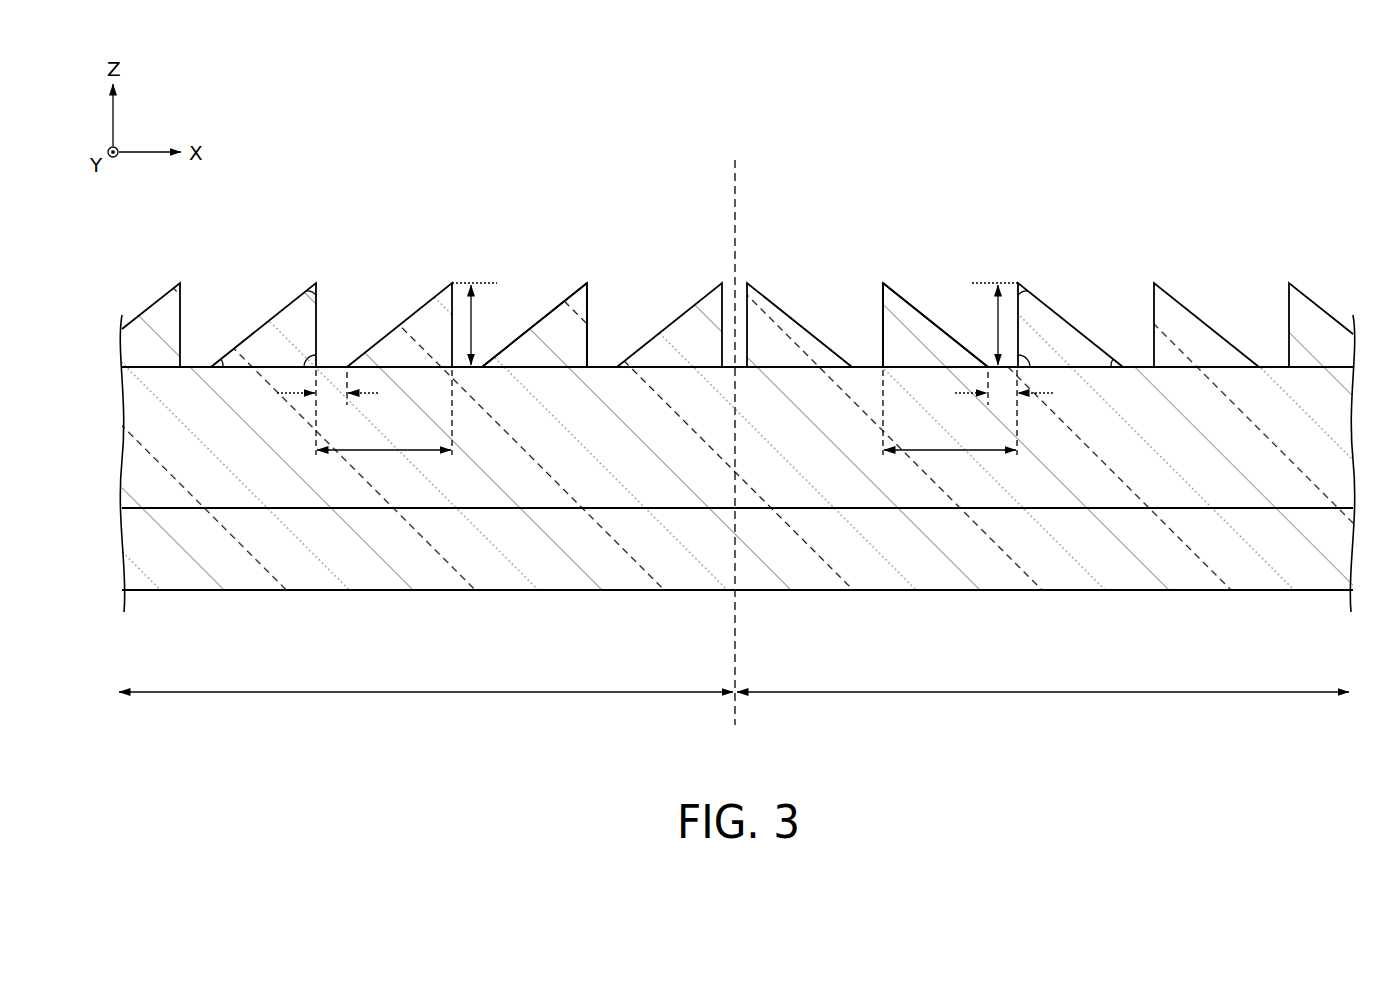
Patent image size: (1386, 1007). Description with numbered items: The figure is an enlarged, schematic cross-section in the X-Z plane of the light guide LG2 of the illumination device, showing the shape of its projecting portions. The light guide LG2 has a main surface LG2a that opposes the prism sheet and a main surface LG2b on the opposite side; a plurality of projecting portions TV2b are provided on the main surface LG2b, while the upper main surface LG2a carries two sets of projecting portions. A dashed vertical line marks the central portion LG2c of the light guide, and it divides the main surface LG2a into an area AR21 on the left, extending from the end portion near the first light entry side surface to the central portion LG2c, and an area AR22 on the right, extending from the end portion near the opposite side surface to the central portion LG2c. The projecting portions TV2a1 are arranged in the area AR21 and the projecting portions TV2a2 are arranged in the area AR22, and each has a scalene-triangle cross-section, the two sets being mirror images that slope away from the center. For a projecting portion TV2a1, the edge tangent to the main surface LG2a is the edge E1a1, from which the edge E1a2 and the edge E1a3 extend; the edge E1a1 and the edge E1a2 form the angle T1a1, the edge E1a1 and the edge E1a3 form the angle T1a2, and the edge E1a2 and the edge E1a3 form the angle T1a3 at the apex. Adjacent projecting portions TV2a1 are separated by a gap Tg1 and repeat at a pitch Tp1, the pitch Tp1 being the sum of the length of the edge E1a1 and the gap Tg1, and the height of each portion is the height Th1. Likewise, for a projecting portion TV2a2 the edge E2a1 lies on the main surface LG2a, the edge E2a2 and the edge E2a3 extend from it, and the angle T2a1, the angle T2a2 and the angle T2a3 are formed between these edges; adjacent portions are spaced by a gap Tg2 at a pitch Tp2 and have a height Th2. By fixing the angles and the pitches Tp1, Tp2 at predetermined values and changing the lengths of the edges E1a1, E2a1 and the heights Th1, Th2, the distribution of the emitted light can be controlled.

The light guide LG2 is at (737, 418).
The main surface LG2a is at (1137, 366).
The main surface LG2b is at (495, 510).
The central portion LG2c is at (735, 368).
The projecting portions TV2a1 is at (277, 327).
The projecting portions TV2a2 is at (1070, 338).
The projecting portions TV2b is at (323, 575).
The angle T1a1 is at (313, 353).
The angle T1a2 is at (236, 353).
The angle T1a3 is at (298, 292).
The angle T2a1 is at (1033, 353).
The angle T2a2 is at (1105, 355).
The angle T2a3 is at (1030, 292).
The edge E1a1 is at (567, 365).
The edge E1a2 is at (589, 336).
The edge E1a3 is at (535, 320).
The edge E2a1 is at (900, 366).
The edge E2a2 is at (880, 335).
The edge E2a3 is at (935, 322).
The height Th1 is at (481, 324).
The height Th2 is at (987, 324).
The gap Tg1 is at (327, 412).
The gap Tg2 is at (1003, 396).
The pitch Tp1 is at (384, 425).
The pitch Tp2 is at (949, 425).
The area AR21 is at (426, 711).
The area AR22 is at (1043, 711).